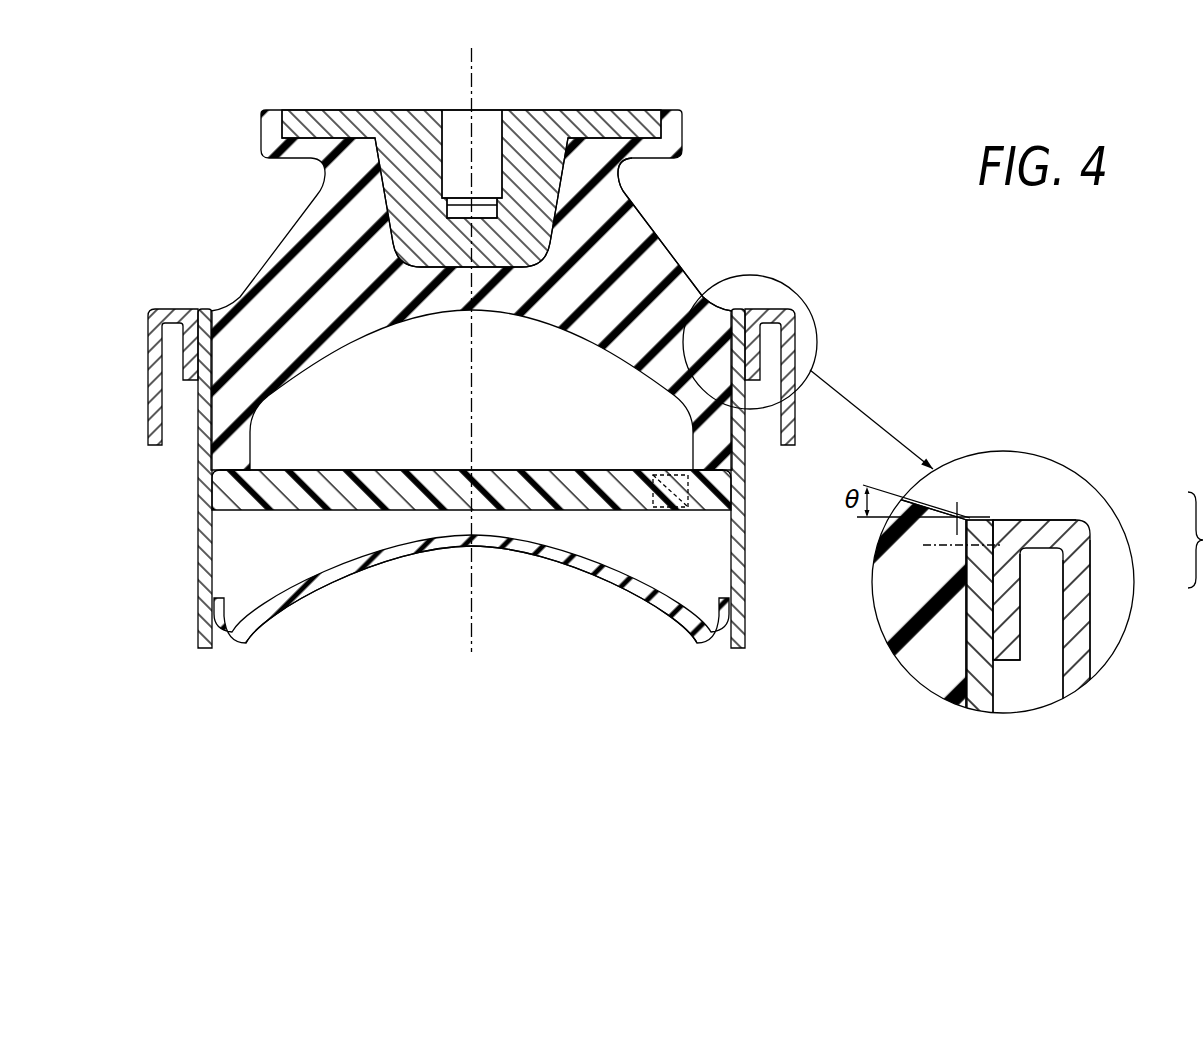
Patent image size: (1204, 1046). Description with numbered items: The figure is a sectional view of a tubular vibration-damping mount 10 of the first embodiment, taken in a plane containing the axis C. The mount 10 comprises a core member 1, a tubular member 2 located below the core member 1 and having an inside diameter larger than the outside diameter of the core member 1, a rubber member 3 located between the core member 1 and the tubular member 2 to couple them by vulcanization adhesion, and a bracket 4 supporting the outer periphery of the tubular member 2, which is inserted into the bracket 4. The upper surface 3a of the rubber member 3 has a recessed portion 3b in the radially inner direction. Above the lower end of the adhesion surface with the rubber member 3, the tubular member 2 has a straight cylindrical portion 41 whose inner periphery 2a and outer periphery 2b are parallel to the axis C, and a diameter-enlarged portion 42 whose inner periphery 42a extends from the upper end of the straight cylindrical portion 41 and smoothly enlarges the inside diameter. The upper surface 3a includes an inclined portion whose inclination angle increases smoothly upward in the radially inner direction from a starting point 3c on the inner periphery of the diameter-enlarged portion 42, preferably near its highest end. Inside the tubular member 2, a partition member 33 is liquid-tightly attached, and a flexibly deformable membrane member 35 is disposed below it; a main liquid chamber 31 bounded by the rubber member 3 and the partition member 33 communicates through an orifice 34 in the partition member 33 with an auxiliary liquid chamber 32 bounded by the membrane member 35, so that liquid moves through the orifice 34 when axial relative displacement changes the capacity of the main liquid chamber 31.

The core member 1 is at (418, 137).
The tubular member 2 is at (202, 470).
The inner periphery 2a is at (965, 665).
The outer periphery 2b is at (992, 683).
The rubber member 3 is at (272, 302).
The upper surface 3a is at (638, 213).
The recessed portion 3b is at (622, 174).
The starting point 3c is at (993, 520).
The bracket 4 is at (783, 420).
The tubular vibration-damping mount 10 is at (735, 116).
The main liquid chamber 31 is at (268, 512).
The auxiliary liquid chamber 32 is at (620, 537).
The partition member 33 is at (312, 447).
The orifice 34 is at (680, 510).
The membrane member 35 is at (540, 548).
The straight cylindrical portion 41 is at (978, 593).
The diameter-enlarged portion 42 is at (1000, 517).
The inner periphery 42a is at (1033, 536).
The axis C is at (474, 72).